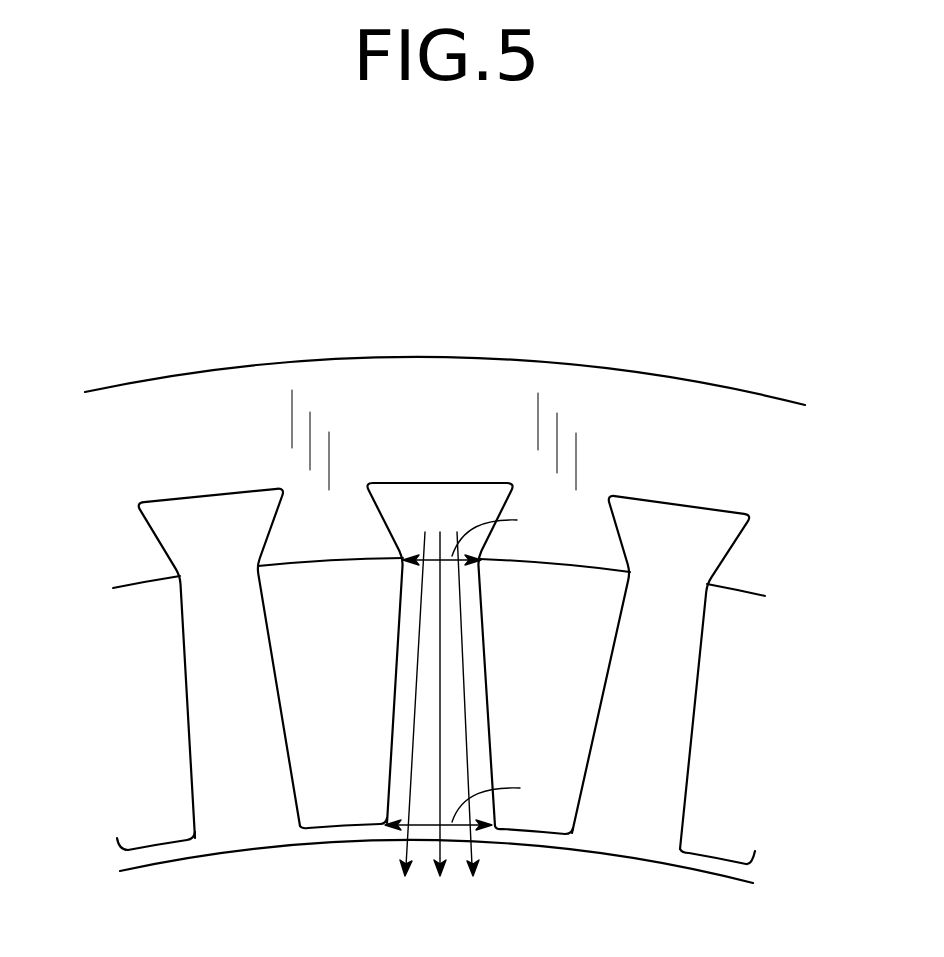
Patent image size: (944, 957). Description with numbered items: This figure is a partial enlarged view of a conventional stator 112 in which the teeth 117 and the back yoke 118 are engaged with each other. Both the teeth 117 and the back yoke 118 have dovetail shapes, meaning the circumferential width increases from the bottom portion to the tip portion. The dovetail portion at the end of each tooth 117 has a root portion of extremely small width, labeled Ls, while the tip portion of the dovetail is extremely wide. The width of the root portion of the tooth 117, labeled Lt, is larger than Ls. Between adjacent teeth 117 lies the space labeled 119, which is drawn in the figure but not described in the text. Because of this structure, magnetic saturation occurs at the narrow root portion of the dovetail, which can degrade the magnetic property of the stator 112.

The stator 112 is at (226, 364).
The teeth 117 is at (213, 710).
The back yoke 118 is at (627, 397).
The slot 119 is at (345, 800).